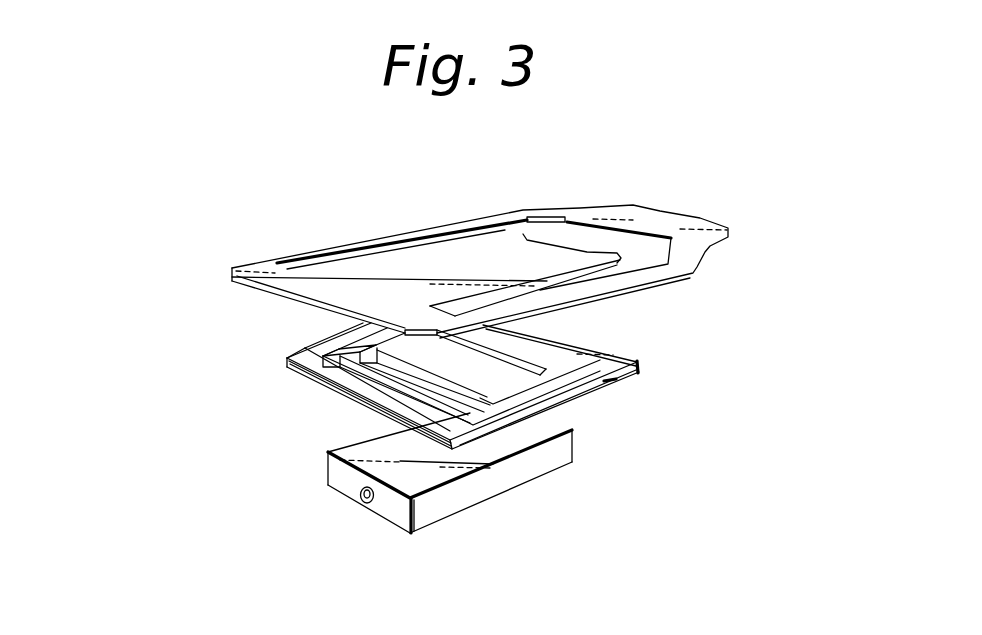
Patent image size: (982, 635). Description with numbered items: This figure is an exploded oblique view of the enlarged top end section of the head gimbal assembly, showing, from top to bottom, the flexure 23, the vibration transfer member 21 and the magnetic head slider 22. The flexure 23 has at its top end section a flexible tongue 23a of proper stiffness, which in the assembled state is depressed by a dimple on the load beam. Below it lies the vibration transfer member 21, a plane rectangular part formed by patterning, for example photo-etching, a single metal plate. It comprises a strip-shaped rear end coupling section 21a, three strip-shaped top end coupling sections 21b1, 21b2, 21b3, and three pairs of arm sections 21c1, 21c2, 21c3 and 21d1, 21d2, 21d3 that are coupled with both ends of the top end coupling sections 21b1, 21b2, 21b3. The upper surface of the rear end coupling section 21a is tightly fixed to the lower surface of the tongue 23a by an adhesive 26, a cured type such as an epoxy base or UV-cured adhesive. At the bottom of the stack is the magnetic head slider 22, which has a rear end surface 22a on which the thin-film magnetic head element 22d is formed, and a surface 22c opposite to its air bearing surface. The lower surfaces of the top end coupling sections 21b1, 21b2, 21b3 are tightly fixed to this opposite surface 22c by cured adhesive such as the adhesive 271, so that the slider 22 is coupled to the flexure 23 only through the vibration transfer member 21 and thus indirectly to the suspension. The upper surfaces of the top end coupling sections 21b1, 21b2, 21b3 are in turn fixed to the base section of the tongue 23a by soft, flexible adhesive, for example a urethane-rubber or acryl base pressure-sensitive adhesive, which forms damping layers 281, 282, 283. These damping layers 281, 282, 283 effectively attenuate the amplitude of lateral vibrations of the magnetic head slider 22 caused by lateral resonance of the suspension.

The flexure 23 is at (638, 210).
The flexible tongue 23a is at (460, 260).
The adhesive 26 is at (577, 343).
The vibration transfer member 21 is at (637, 370).
The rear end coupling section 21a is at (610, 380).
The arm section 21c1 is at (527, 405).
The arm section 21c2 is at (533, 390).
The arm section 21c3 is at (550, 385).
The top end coupling section 21b1 is at (328, 483).
The top end coupling section 21b2 is at (400, 420).
The top end coupling section 21b3 is at (349, 398).
The damping layer 281 is at (384, 416).
The damping layer 282 is at (372, 410).
The damping layer 283 is at (313, 380).
The arm section 21d1 is at (343, 353).
The arm section 21d2 is at (343, 340).
The arm section 21d3 is at (405, 332).
The magnetic head slider 22 is at (470, 503).
The rear end surface 22a is at (403, 517).
The opposite surface 22c is at (433, 477).
The thin-film magnetic head element 22d is at (367, 507).
The adhesive 271 is at (480, 465).